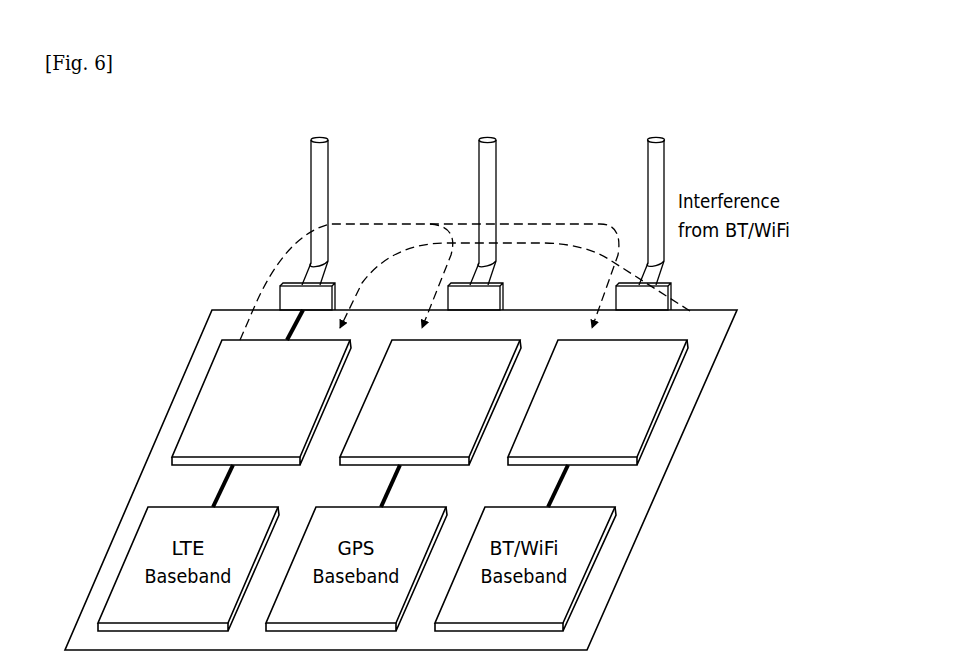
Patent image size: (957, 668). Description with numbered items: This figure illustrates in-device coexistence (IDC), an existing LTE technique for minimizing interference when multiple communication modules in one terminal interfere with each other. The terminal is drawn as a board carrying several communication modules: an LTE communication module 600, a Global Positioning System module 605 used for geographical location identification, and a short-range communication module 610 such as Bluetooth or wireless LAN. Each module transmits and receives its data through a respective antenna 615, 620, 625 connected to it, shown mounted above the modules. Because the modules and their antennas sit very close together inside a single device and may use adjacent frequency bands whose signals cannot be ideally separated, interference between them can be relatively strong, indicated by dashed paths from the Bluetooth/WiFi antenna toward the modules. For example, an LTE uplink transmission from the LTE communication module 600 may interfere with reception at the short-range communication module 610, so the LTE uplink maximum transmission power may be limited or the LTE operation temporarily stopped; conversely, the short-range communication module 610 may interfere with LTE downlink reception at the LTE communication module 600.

The LTE communication module 600 is at (261, 402).
The Global Positioning System (GPS) module 605 is at (430, 402).
The short-range communication module 610 is at (598, 402).
The antenna 615 is at (318, 138).
The antenna 620 is at (486, 138).
The antenna 625 is at (655, 138).